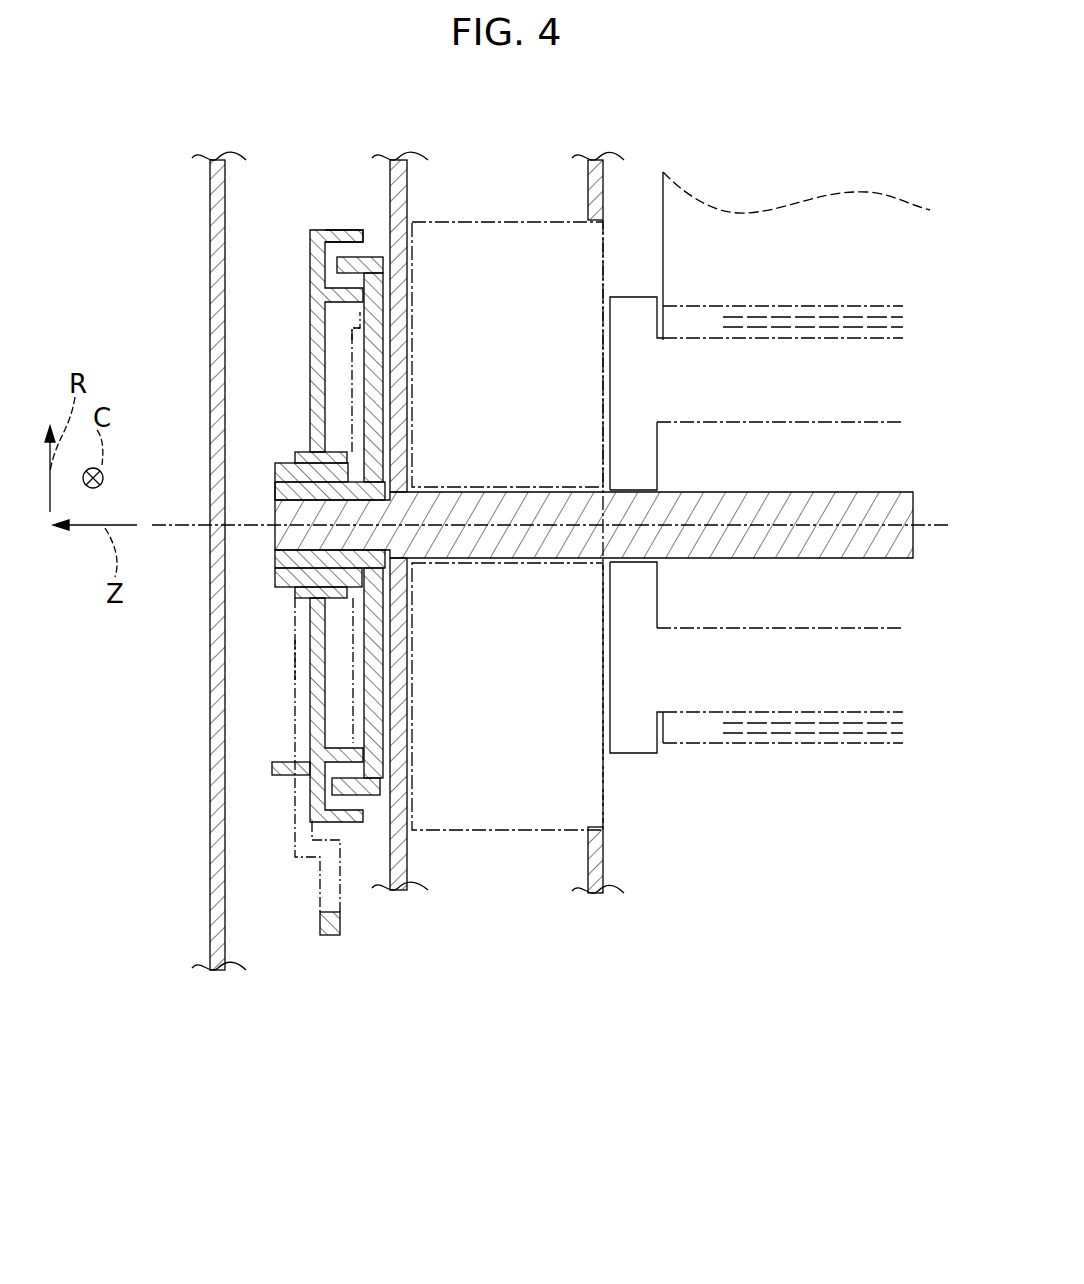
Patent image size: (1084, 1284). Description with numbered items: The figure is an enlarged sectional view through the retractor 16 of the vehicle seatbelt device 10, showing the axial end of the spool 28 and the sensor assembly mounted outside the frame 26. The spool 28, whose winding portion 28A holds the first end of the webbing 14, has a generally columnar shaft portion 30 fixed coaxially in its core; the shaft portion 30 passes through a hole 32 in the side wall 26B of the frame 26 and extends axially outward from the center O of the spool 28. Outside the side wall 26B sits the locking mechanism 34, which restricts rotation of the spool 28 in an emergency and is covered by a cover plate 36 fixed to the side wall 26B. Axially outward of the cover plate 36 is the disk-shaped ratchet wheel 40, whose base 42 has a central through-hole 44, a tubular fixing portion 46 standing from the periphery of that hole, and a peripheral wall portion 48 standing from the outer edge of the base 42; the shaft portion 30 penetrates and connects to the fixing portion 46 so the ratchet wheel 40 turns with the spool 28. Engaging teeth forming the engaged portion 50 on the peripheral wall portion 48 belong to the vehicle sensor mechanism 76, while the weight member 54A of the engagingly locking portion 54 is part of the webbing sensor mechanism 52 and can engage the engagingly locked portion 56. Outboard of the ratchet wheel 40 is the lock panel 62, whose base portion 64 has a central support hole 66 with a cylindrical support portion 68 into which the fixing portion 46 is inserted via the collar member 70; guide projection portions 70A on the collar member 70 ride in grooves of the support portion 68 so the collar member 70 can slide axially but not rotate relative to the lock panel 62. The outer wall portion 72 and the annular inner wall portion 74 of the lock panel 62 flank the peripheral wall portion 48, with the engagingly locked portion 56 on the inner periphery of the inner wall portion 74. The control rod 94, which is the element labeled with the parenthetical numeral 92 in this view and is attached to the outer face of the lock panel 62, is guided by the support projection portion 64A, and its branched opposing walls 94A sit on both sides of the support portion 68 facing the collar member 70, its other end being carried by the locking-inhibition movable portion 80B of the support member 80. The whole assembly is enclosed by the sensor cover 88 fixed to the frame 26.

The vehicle seatbelt device 10 is at (496, 647).
The webbing 14 is at (762, 237).
The retractor 16 is at (496, 647).
The frame 26 is at (687, 552).
The side wall 26B is at (605, 880).
The spool 28 is at (640, 762).
The winding portion 28A is at (810, 695).
The shaft portion 30 is at (735, 492).
The hole 32 is at (602, 226).
The locking mechanism 34 is at (487, 832).
The cover plate 36 is at (407, 197).
The ratchet wheel 40 is at (388, 308).
The base 42 is at (412, 385).
The through-hole 44 is at (412, 492).
The fixing portion 46 is at (405, 585).
The peripheral wall portion 48 is at (385, 785).
The engaged portion 50 is at (352, 797).
The webbing sensor mechanism 52 is at (304, 504).
The engagingly locking portion 54 is at (352, 372).
The weight member 54A is at (352, 335).
The engagingly locked portion 56 is at (345, 745).
The lock panel 62 is at (304, 264).
The base portion 64 is at (302, 812).
The support projection portion 64A is at (282, 775).
The support hole 66 is at (405, 470).
The support portion 68 is at (300, 452).
The collar member 70 is at (270, 575).
The guide projection portions 70A is at (290, 657).
The outer wall portion 72 is at (343, 228).
The inner wall portion 74 is at (333, 270).
The vehicle sensor mechanism 76 is at (405, 577).
The support member 80 is at (350, 960).
The locking-inhibition movable portion 80B is at (330, 935).
The sensor cover 88 is at (210, 228).
The yoke 92 is at (193, 649).
The control rod 94 is at (297, 600).
The opposing walls 94A is at (275, 500).
The center O is at (915, 523).